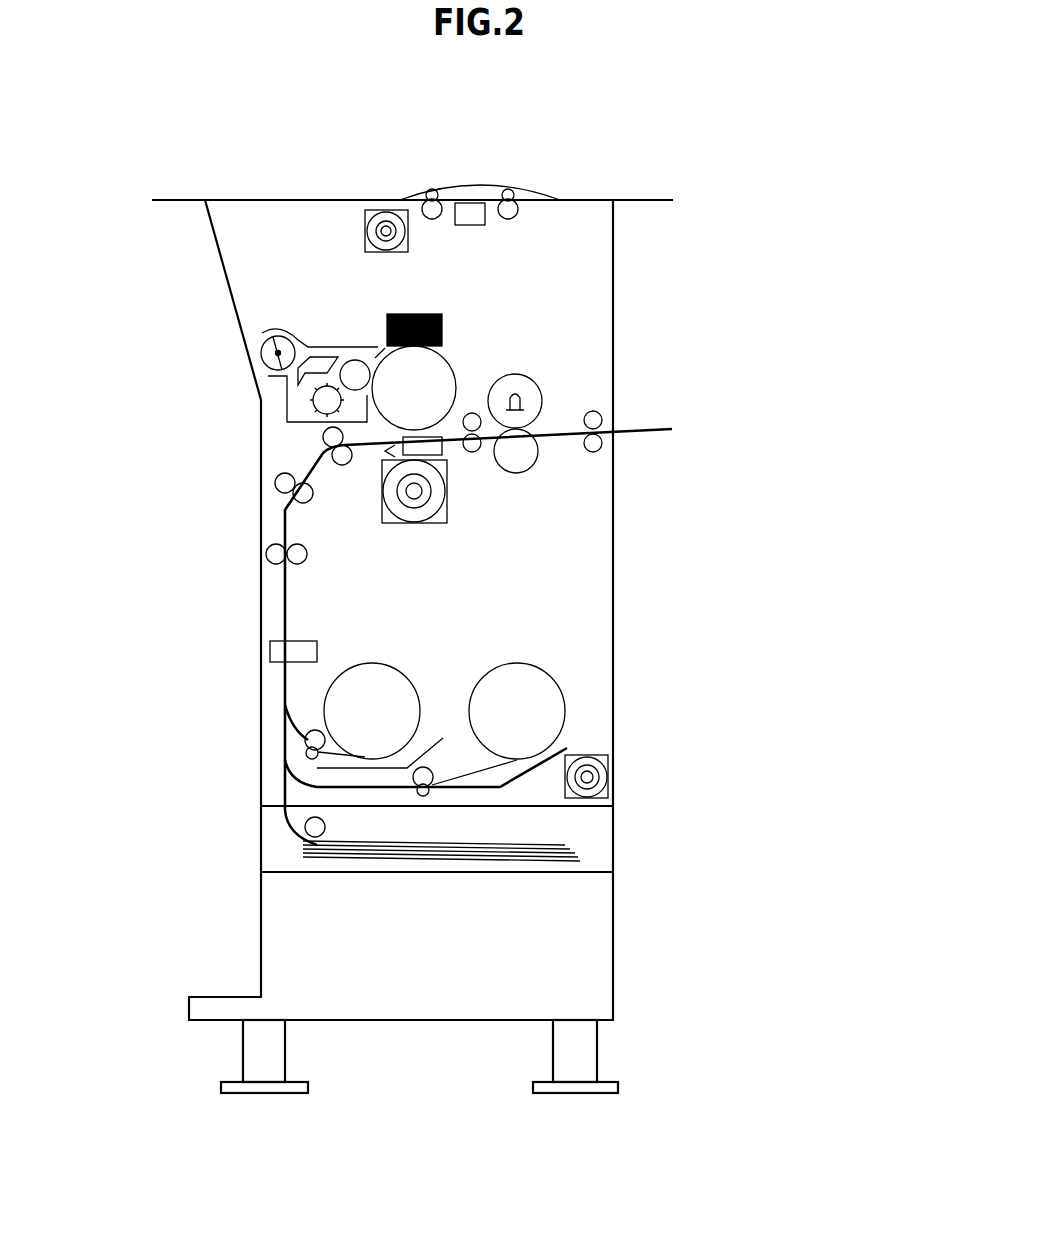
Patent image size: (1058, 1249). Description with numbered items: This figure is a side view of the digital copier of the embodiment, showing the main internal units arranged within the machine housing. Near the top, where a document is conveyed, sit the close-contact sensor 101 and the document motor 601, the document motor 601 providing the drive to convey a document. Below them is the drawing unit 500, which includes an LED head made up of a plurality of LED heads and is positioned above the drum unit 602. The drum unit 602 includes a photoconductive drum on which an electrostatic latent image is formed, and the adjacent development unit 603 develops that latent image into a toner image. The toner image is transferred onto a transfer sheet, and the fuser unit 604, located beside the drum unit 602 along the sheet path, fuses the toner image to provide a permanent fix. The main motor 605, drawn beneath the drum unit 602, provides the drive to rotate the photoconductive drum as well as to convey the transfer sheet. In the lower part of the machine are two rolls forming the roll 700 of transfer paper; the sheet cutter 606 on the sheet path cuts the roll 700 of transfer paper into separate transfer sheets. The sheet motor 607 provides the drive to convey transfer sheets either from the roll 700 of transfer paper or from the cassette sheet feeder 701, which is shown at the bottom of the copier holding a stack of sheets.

The close-contact sensor 101 is at (478, 226).
The drawing unit 500 is at (387, 320).
The document motor 601 is at (370, 210).
The drum unit 602 is at (450, 362).
The development unit 603 is at (288, 388).
The fuser unit 604 is at (536, 383).
The main motor 605 is at (447, 490).
The sheet cutter 606 is at (270, 662).
The sheet motor 607 is at (608, 757).
The roll of transfer paper 700 is at (400, 670).
The cassette sheet feeder 701 is at (560, 845).